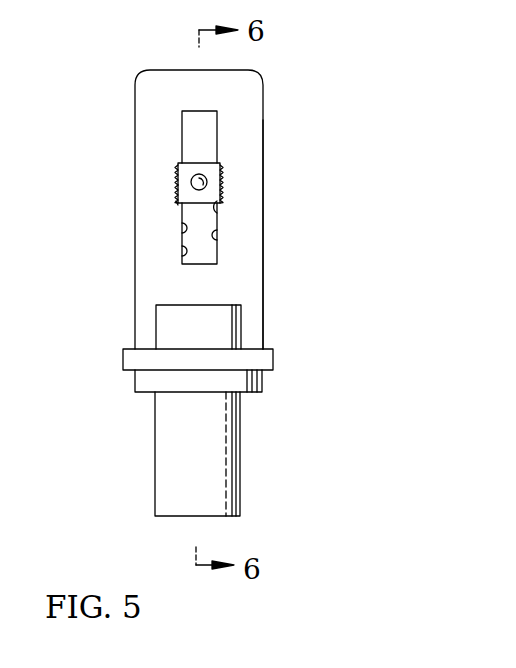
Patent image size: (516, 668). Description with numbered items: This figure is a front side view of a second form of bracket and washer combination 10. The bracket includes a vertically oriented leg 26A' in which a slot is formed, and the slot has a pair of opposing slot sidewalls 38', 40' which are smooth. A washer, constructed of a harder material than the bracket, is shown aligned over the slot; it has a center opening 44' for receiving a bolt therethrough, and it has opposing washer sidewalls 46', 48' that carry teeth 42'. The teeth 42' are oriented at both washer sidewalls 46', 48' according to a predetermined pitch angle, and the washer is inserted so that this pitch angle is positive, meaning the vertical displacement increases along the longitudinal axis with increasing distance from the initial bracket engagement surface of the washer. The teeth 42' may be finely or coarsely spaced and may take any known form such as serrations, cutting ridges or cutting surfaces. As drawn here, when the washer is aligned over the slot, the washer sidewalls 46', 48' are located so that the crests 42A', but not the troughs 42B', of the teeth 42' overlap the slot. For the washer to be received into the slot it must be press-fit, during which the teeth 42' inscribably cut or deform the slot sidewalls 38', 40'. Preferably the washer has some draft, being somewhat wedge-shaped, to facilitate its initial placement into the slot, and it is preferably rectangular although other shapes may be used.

The bracket and washer combination 10 is at (122, 110).
The vertically oriented leg 26A' is at (250, 341).
The slot sidewall 38' is at (280, 252).
The slot sidewall 40' is at (117, 234).
The teeth 42' is at (184, 163).
The crests 42A' is at (290, 219).
The troughs 42B' is at (109, 211).
The center opening 44' is at (127, 168).
The washer sidewall 46' is at (289, 185).
The washer sidewall 48' is at (107, 188).